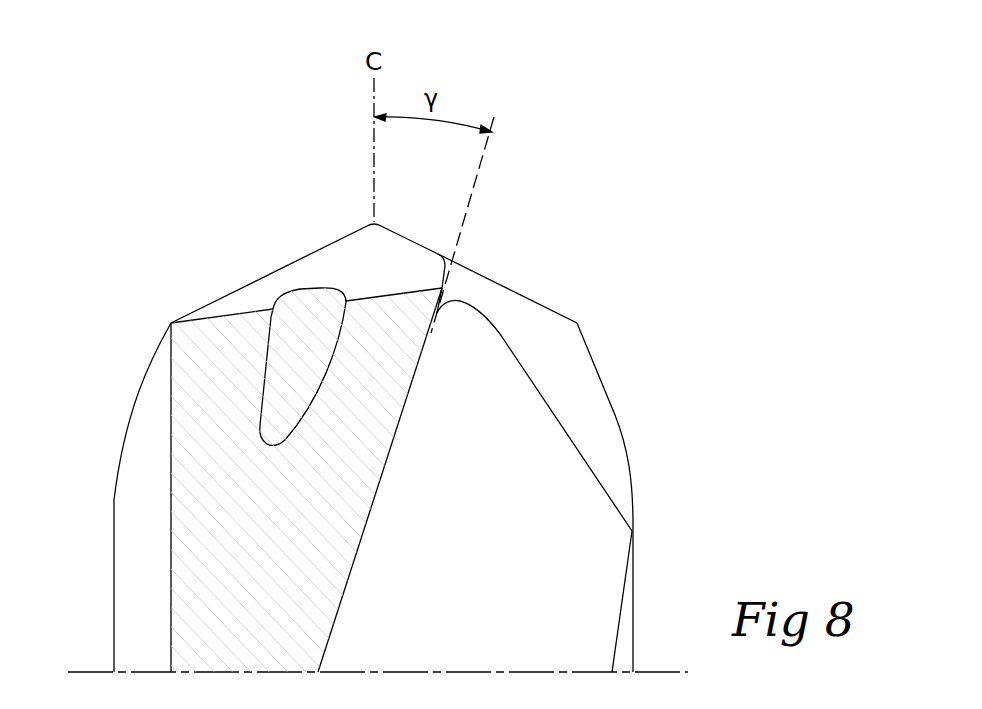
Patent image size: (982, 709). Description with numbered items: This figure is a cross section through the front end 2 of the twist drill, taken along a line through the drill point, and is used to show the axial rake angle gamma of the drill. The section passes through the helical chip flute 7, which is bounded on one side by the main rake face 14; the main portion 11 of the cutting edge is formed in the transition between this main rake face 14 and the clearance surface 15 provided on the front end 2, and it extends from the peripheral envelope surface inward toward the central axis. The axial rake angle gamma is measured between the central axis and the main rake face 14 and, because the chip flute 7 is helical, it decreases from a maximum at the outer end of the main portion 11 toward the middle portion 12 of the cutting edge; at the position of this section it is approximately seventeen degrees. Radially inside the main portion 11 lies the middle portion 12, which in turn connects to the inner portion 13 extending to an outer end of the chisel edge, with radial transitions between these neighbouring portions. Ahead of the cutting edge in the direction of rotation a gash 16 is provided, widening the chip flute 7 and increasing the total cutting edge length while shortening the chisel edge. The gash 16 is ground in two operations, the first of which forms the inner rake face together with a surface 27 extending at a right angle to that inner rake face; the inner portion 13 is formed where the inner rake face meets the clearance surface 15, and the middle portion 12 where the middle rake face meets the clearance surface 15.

The front end 2 is at (298, 262).
The helical chip flute 7 is at (588, 585).
The main portion 11 is at (442, 280).
The middle portion 12 is at (435, 259).
The inner portion 13 is at (392, 235).
The main rake face 14 is at (385, 468).
The clearance surface 15 is at (390, 280).
The gash 16 is at (505, 307).
The surface 27 is at (572, 364).